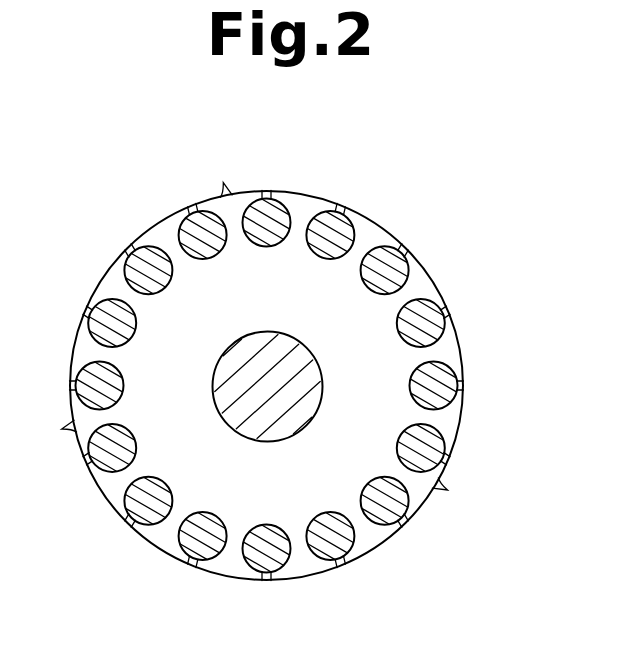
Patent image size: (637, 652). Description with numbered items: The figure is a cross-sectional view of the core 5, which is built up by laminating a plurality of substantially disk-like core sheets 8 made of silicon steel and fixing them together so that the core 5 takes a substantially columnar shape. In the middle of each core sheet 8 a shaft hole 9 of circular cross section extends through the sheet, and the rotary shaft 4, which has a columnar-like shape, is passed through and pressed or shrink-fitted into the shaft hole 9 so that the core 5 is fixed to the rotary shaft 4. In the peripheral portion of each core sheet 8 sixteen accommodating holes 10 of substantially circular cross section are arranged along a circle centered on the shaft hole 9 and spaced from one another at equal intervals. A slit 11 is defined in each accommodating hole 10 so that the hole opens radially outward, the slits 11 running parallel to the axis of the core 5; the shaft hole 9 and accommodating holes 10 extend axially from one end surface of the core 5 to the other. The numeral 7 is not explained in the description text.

The rotary shaft 4 is at (291, 362).
The core 5 is at (266, 346).
The slit 7 is at (278, 361).
The core sheet 8 is at (376, 228).
The shaft hole 9 is at (306, 356).
The accommodating hole 10 is at (324, 255).
The slit 11 is at (134, 251).